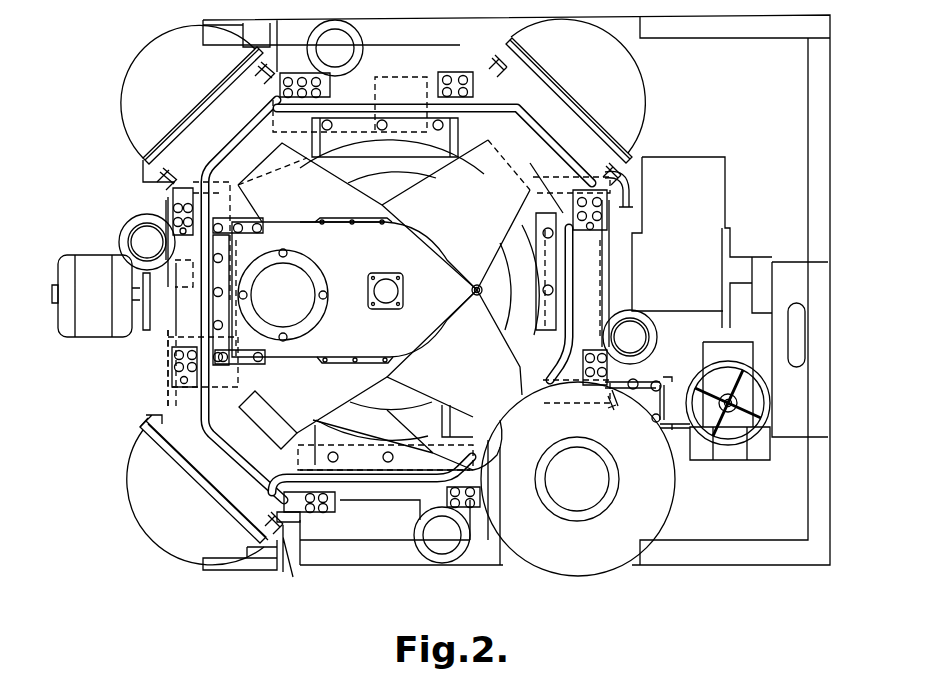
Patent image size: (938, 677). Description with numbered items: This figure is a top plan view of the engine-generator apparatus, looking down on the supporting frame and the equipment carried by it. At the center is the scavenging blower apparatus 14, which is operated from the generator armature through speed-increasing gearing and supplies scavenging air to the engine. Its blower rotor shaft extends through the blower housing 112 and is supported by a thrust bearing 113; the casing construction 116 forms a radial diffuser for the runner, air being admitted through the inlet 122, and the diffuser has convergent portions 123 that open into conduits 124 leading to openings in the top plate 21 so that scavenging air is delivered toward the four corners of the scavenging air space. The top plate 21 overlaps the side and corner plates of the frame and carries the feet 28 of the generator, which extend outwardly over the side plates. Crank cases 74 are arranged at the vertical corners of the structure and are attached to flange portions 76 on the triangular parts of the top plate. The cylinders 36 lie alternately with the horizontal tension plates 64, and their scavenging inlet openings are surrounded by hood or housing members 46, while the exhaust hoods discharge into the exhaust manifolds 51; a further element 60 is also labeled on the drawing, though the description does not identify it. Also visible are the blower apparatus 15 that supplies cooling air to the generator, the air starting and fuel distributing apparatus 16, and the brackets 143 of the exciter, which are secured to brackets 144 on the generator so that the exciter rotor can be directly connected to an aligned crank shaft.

The scavenging blower apparatus 14 is at (388, 338).
The blower apparatus 15 is at (101, 307).
The air starting and fuel distributing apparatus 16 is at (783, 240).
The top plate 21 is at (148, 428).
The feet 28 is at (538, 248).
The cylinders 36 is at (362, 500).
The hood or housing members 46 is at (296, 573).
The exhaust manifolds 51 is at (120, 236).
The hydraulic line 60 is at (527, 130).
The horizontal tension plates 64 is at (338, 528).
The crank cases 74 is at (160, 528).
The flange portions 76 is at (213, 481).
The blower housing 112 is at (347, 239).
The thrust bearing 113 is at (403, 288).
The casing construction 116 is at (384, 267).
The inlet 122 is at (310, 273).
The convergent portions 123 is at (414, 378).
The conduits 124 is at (268, 427).
The brackets 143 is at (490, 450).
The brackets 144 is at (445, 421).